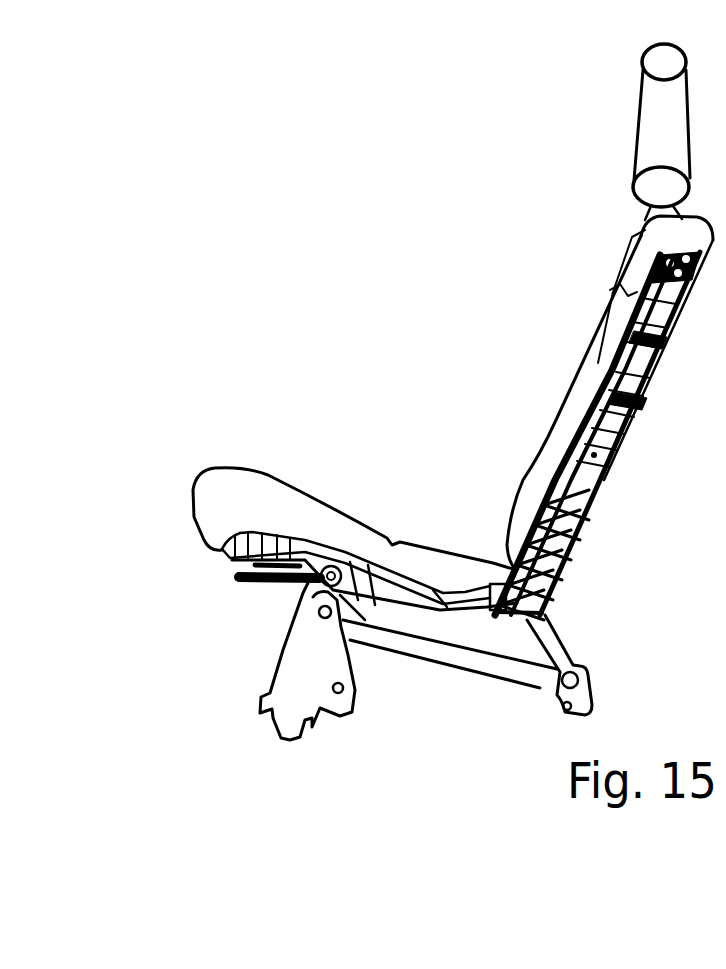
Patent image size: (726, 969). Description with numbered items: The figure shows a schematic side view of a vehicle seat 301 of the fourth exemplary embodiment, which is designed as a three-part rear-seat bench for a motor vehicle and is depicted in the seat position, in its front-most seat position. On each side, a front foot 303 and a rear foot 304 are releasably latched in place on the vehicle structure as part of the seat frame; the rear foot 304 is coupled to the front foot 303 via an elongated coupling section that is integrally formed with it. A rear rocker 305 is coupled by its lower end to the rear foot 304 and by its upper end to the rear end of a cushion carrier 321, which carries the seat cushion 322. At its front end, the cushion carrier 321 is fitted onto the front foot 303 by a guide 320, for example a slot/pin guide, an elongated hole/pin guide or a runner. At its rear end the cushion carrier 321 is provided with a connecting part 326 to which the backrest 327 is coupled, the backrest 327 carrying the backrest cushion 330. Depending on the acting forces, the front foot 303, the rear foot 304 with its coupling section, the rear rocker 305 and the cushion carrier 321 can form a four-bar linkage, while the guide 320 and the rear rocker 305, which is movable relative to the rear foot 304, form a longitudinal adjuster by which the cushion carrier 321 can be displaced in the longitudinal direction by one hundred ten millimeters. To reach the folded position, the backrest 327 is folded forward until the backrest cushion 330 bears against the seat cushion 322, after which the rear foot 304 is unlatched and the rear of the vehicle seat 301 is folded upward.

The vehicle seat 301 is at (449, 318).
The backrest cushion 330 is at (566, 408).
The backrest 327 is at (594, 478).
The connecting part 326 is at (562, 573).
The seat cushion 322 is at (304, 514).
The cushion carrier 321 is at (227, 555).
The guide 320 is at (258, 588).
The front foot 303 is at (302, 672).
The rear foot 304 is at (547, 675).
The rear rocker 305 is at (553, 646).